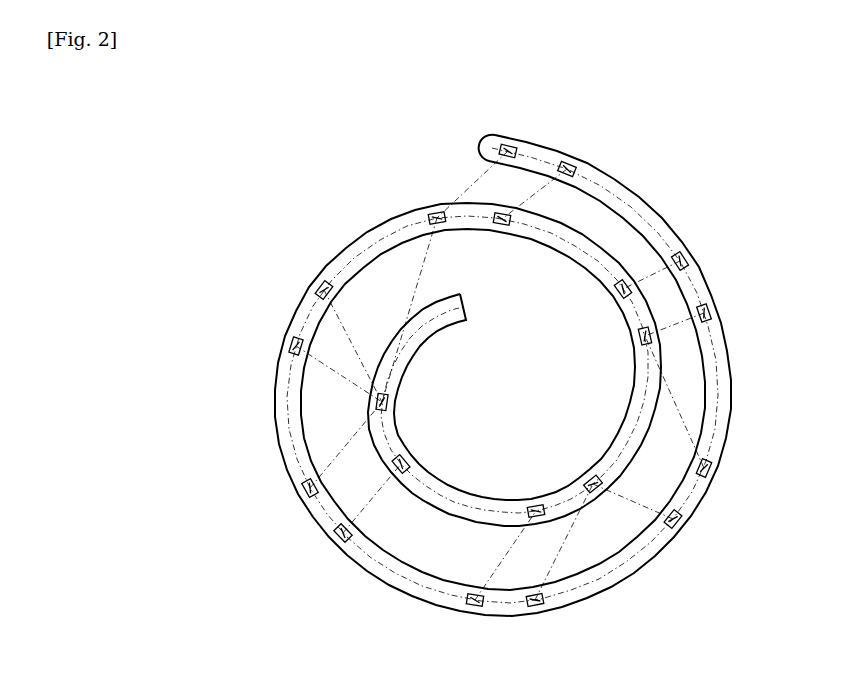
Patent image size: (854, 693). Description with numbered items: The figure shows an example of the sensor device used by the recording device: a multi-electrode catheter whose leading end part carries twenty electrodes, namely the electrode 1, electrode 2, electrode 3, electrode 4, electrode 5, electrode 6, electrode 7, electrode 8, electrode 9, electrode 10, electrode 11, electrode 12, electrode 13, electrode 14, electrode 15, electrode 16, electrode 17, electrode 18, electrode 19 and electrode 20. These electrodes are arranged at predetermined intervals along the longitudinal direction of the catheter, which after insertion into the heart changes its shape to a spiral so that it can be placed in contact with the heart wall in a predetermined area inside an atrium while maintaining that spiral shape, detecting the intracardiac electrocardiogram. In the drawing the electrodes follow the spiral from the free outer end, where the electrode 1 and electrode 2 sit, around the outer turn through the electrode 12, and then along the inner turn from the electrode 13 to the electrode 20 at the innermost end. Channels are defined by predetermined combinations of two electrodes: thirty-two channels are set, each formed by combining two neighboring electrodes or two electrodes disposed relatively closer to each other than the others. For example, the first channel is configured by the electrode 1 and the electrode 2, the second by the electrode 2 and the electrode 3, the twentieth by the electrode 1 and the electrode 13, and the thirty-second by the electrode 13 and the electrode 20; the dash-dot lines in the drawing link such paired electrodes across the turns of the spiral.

The electrode 1 is at (514, 129).
The electrode 2 is at (575, 154).
The electrode 3 is at (691, 252).
The electrode 4 is at (719, 306).
The electrode 5 is at (718, 477).
The electrode 6 is at (683, 533).
The electrode 7 is at (536, 620).
The electrode 8 is at (474, 622).
The electrode 9 is at (328, 545).
The electrode 10 is at (288, 495).
The electrode 11 is at (275, 341).
The electrode 12 is at (305, 277).
The electrode 13 is at (430, 200).
The electrode 14 is at (493, 241).
The electrode 15 is at (600, 303).
The electrode 16 is at (623, 343).
The electrode 17 is at (580, 466).
The electrode 18 is at (526, 491).
The electrode 19 is at (417, 452).
The electrode 20 is at (401, 404).